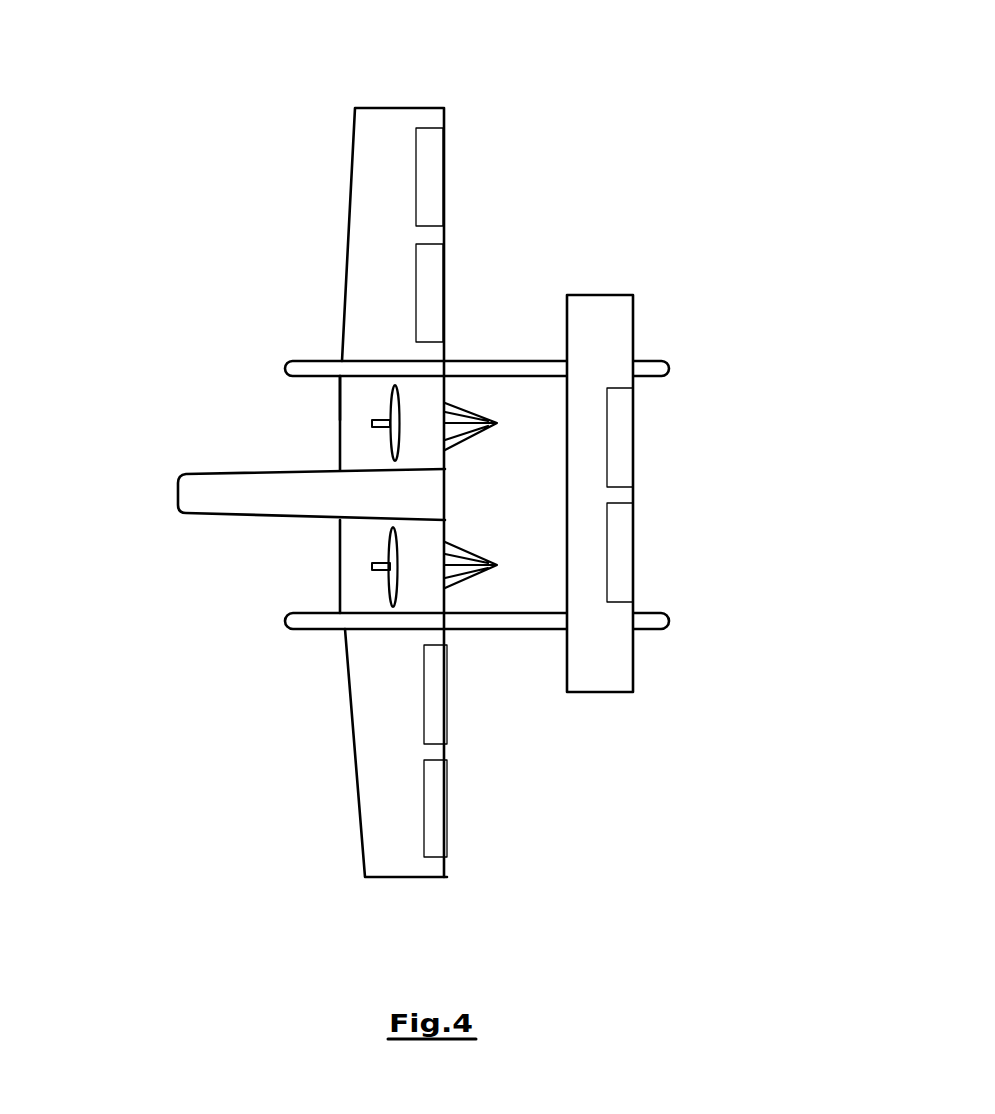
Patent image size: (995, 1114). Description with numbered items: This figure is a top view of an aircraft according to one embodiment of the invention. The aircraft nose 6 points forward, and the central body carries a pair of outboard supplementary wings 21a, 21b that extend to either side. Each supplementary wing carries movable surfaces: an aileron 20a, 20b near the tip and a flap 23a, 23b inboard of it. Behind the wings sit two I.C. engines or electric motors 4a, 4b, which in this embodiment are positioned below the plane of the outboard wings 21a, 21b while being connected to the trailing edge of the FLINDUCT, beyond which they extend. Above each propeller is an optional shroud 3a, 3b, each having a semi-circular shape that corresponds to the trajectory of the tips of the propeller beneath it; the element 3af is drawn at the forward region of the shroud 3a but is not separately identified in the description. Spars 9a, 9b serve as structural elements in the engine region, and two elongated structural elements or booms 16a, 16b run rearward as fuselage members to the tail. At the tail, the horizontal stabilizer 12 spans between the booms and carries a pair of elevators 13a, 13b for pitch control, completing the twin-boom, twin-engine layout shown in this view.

The supplementary wing 21a is at (378, 230).
The supplementary wing 21b is at (378, 762).
The aileron 20a is at (431, 173).
The aileron 20b is at (436, 808).
The flap 23a is at (428, 292).
The flap 23b is at (435, 688).
The shroud 3a is at (425, 423).
The upper nacelle front portion 3af is at (372, 392).
The shroud 3b is at (425, 582).
The I.C. engine/electric motor 4a is at (387, 423).
The I.C. engine/electric motor 4b is at (391, 563).
The structural element, spar 9a is at (355, 417).
The structural element, spar 9b is at (348, 563).
The aircraft nose 6 is at (231, 495).
The elongated structural element, boom, fuselage 16a is at (483, 368).
The elongated structural element, boom, fuselage 16b is at (495, 620).
The horizontal stabilizer 12 is at (583, 497).
The elevator 13a is at (626, 432).
The elevator 13b is at (620, 548).